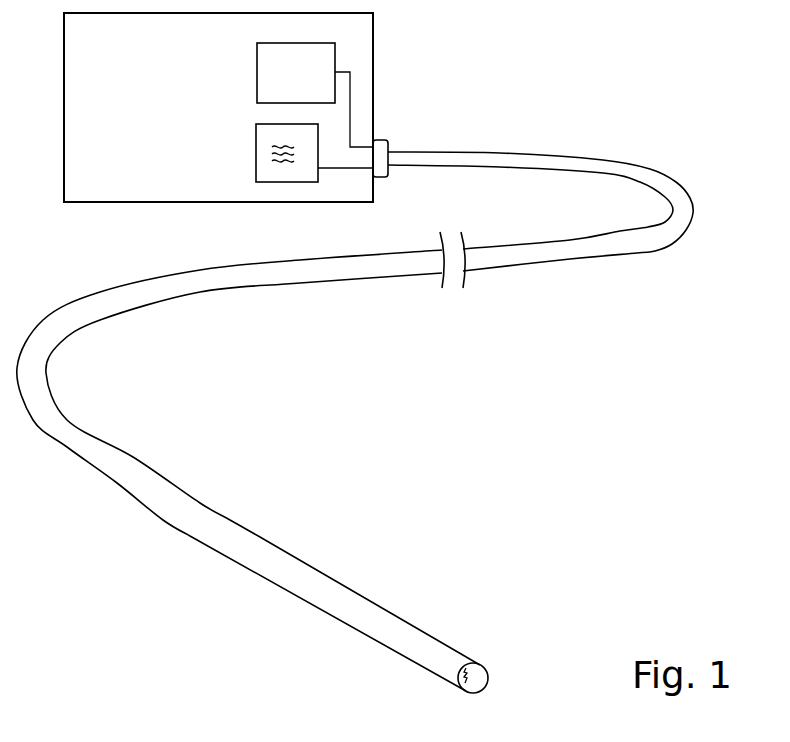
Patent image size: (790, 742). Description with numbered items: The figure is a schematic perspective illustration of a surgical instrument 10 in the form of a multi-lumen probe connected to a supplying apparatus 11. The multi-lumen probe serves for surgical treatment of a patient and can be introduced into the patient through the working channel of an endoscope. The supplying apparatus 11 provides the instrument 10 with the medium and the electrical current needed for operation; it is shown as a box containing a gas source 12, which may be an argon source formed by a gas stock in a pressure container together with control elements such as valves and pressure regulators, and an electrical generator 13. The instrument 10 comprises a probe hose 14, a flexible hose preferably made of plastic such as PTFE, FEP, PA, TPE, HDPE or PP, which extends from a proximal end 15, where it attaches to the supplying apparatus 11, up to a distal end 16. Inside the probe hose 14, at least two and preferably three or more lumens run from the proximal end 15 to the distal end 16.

The surgical instrument 10 is at (355, 422).
The supplying apparatus 11 is at (284, 107).
The gas source 12 is at (310, 83).
The electrical generator 13 is at (256, 136).
The probe hose 14 is at (235, 540).
The proximal end 15 is at (400, 160).
The distal end 16 is at (468, 667).